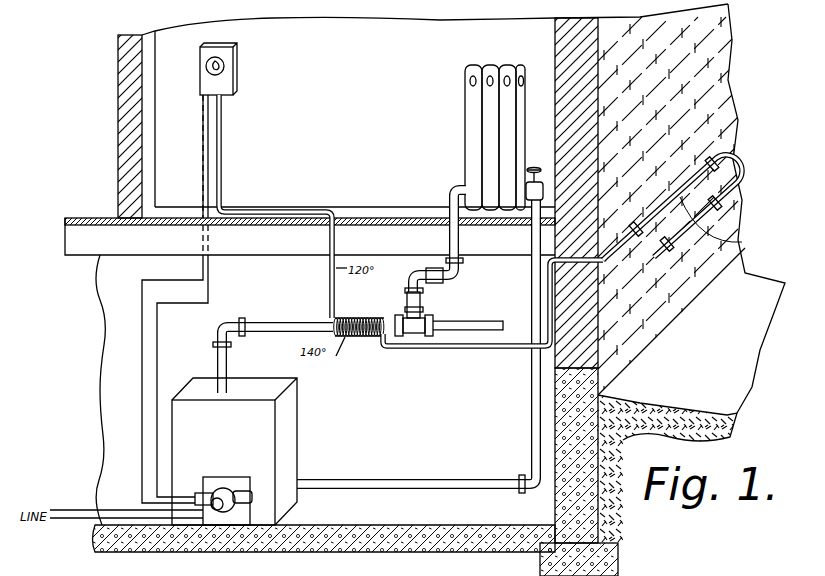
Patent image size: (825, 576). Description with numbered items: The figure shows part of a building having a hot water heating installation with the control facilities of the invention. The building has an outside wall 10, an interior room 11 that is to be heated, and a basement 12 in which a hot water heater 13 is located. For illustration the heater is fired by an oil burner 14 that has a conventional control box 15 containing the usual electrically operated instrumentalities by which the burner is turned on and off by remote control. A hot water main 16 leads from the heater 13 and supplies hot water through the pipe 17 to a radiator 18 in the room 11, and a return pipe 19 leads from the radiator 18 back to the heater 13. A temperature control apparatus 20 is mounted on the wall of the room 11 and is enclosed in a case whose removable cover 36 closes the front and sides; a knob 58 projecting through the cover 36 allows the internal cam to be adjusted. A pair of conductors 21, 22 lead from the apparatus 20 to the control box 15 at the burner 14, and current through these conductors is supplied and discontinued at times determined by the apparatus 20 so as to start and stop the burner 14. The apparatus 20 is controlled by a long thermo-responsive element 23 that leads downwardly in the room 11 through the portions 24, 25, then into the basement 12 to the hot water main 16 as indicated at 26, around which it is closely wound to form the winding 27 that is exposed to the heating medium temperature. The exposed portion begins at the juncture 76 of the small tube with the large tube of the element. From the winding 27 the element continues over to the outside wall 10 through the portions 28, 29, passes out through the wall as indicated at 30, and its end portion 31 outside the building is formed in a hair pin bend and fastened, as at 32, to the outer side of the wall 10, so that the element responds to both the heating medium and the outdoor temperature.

The outside wall 10 is at (593, 135).
The room 11 is at (362, 118).
The basement 12 is at (430, 421).
The hot water heater 13 is at (257, 477).
The oil burner 14 is at (219, 510).
The control box 15 is at (201, 493).
The hot water main 16 is at (273, 322).
The pipe 17 is at (450, 236).
The radiator 18 is at (465, 130).
The return pipe 19 is at (530, 400).
The temperature control apparatus 20 is at (226, 62).
The conductor 21 is at (142, 331).
The conductor 22 is at (158, 342).
The thermo-responsive element 23 is at (230, 118).
The portion of thermo-responsive element 24 is at (224, 163).
The portion of thermo-responsive element 25 is at (257, 208).
The portion of thermo-responsive element 26 is at (332, 265).
The winding 27 is at (349, 341).
The portion of thermo-responsive element 28 is at (482, 348).
The portion of thermo-responsive element 29 is at (547, 298).
The portion of thermo-responsive element 30 is at (575, 262).
The end portion 31 is at (744, 240).
The fastening 32 is at (744, 169).
The cover 36 is at (205, 79).
The knob 58 is at (224, 64).
The juncture 76 is at (393, 318).